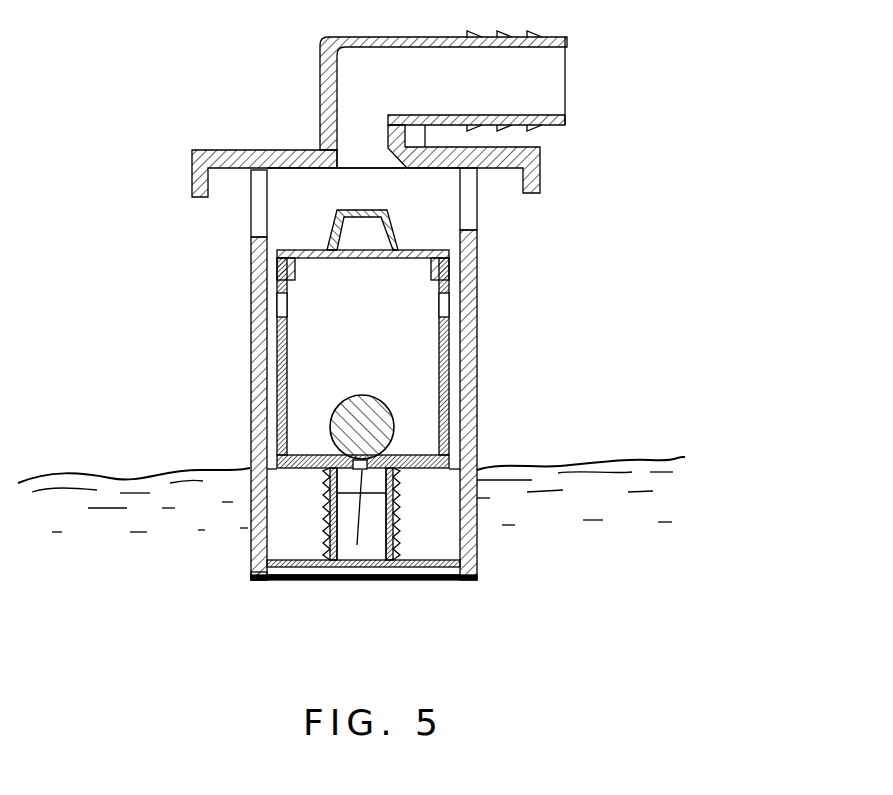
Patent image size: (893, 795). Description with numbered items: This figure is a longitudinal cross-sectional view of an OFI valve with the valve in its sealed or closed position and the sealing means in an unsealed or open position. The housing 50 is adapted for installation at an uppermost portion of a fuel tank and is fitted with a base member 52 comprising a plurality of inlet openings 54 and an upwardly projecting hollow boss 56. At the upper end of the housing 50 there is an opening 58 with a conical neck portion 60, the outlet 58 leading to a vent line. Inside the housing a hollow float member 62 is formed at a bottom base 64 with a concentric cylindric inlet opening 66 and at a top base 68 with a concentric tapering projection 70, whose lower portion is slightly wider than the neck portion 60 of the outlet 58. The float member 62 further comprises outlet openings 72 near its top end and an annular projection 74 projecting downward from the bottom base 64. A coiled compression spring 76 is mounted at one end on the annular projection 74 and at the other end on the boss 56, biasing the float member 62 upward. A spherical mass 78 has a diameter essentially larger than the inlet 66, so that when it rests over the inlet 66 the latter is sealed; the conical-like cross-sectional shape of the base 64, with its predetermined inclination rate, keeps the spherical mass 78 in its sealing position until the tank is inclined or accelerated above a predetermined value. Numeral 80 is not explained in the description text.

The housing 50 is at (257, 354).
The base member 52 is at (410, 583).
The inlet openings 54 is at (291, 585).
The hollow boss 56 is at (393, 530).
The opening 58 is at (357, 117).
The conical neck portion 60 is at (358, 160).
The hollow float member 62 is at (447, 352).
The bottom base 64 is at (450, 455).
The cylindric inlet opening 66 is at (360, 583).
The top base 68 is at (413, 247).
The tapering projection 70 is at (327, 250).
The outlet openings 72 is at (280, 307).
The annular projection 74 is at (325, 485).
The coiled compression spring 76 is at (250, 578).
The spherical mass 78 is at (335, 428).
The orifice 80 is at (393, 450).